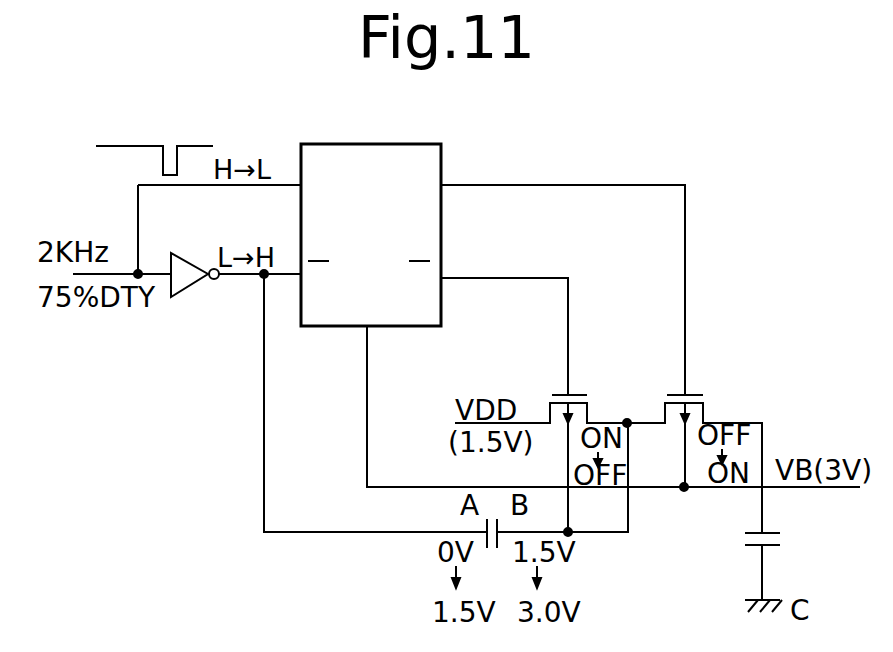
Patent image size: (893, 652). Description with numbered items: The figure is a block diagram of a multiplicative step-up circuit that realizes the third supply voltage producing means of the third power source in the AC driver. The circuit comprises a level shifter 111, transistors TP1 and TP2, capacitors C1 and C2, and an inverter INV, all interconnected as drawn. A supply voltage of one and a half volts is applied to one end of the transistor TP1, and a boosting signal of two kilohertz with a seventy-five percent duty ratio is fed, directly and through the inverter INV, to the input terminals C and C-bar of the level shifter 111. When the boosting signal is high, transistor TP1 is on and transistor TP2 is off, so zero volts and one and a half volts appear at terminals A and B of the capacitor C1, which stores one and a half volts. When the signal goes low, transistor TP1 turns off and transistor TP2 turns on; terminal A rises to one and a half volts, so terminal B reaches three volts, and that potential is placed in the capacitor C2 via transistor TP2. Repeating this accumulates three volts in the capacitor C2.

The level shifter 111 is at (443, 172).
The inverter INV is at (192, 284).
The transistor TP1 is at (599, 406).
The transistor TP2 is at (715, 406).
The capacitor C1 is at (446, 430).
The capacitor C2 is at (784, 569).